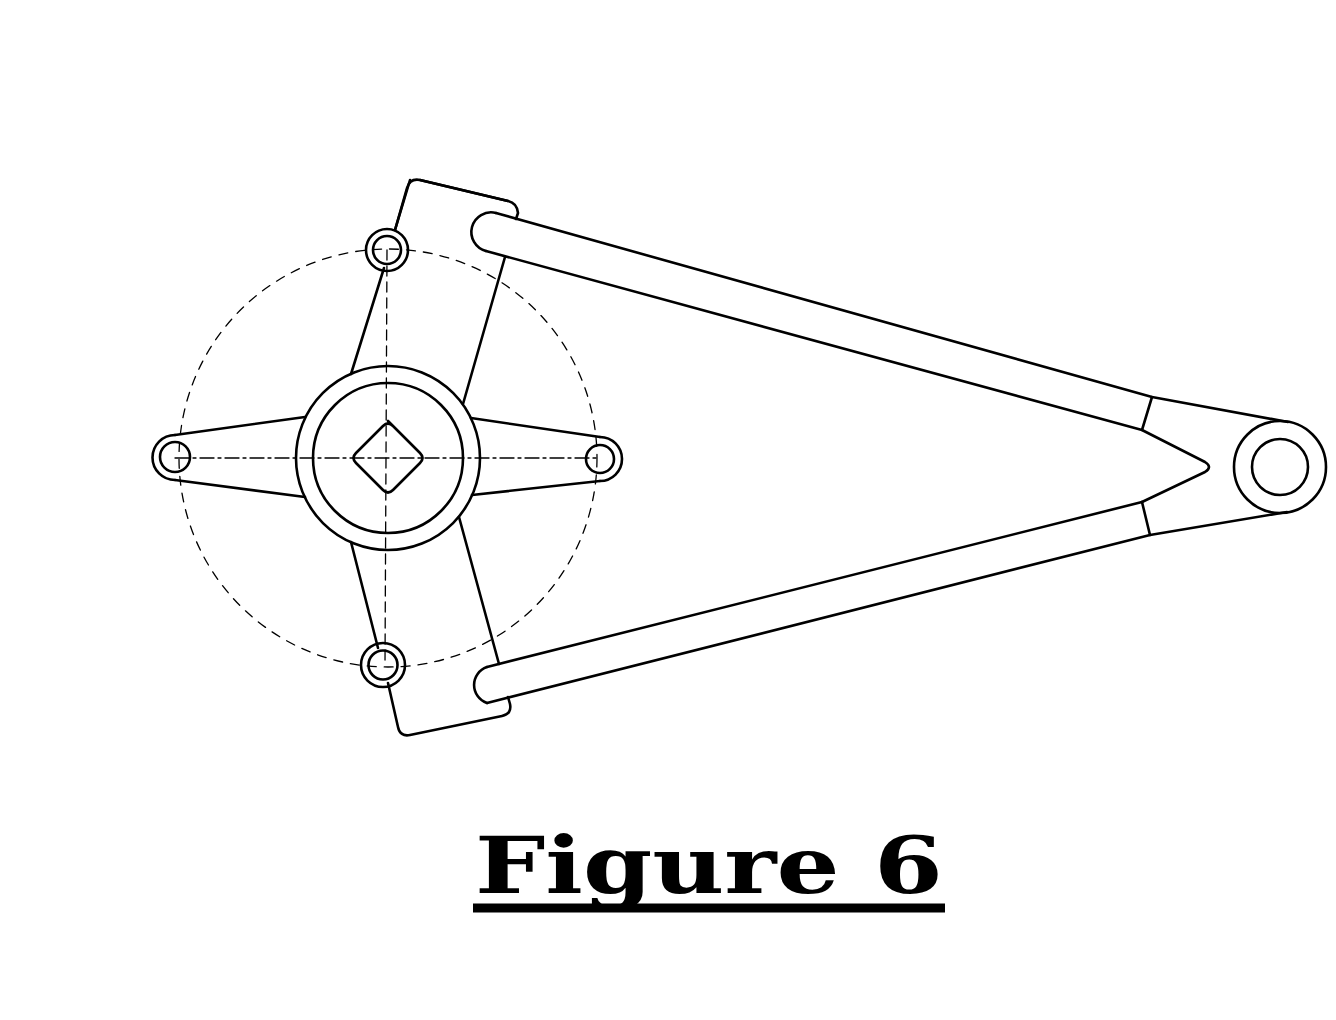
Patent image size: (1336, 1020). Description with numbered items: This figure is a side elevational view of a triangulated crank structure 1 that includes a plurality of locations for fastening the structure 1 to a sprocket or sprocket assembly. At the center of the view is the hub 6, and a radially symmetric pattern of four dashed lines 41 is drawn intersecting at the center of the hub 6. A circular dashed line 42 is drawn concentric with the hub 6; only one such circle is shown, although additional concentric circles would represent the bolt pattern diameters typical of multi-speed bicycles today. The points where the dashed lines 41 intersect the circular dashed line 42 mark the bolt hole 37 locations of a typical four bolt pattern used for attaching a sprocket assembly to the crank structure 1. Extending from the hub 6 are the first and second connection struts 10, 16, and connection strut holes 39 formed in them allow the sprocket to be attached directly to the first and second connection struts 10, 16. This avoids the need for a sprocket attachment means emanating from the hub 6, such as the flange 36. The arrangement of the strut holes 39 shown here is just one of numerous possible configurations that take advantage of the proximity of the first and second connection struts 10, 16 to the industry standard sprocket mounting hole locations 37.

The crank structure 1 is at (932, 115).
The hub 6 is at (332, 387).
The first connection strut 10 is at (472, 187).
The second connection strut 16 is at (403, 737).
The flange 36 is at (605, 482).
The bolt holes 37 is at (388, 255).
The connection strut holes 39 is at (380, 232).
The dashed lines 41 is at (208, 453).
The circular dashed line 42 is at (588, 390).